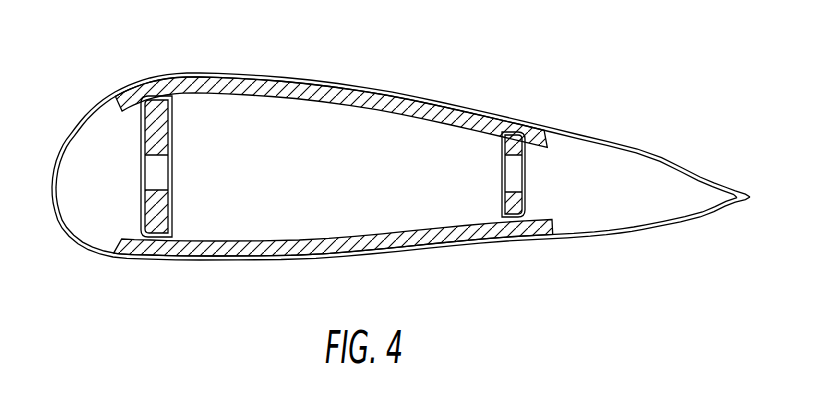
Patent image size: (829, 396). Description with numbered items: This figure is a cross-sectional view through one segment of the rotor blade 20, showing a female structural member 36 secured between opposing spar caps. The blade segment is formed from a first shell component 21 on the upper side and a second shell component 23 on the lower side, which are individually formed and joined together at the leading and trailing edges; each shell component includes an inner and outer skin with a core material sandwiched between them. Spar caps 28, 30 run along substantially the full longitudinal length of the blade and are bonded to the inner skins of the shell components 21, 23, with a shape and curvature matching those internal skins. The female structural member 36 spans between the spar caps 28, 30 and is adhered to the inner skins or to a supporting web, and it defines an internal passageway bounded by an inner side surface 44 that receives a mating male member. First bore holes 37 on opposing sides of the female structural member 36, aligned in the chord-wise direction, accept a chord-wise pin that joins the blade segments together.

The rotor blade 20 is at (401, 170).
The first shell component 21 is at (573, 130).
The second shell component 23 is at (588, 238).
The spar cap 28 is at (187, 80).
The female structural member 36 is at (245, 78).
The spar cap 30 is at (163, 250).
The first bore holes 37 is at (508, 173).
The inner side surface 44 is at (168, 206).